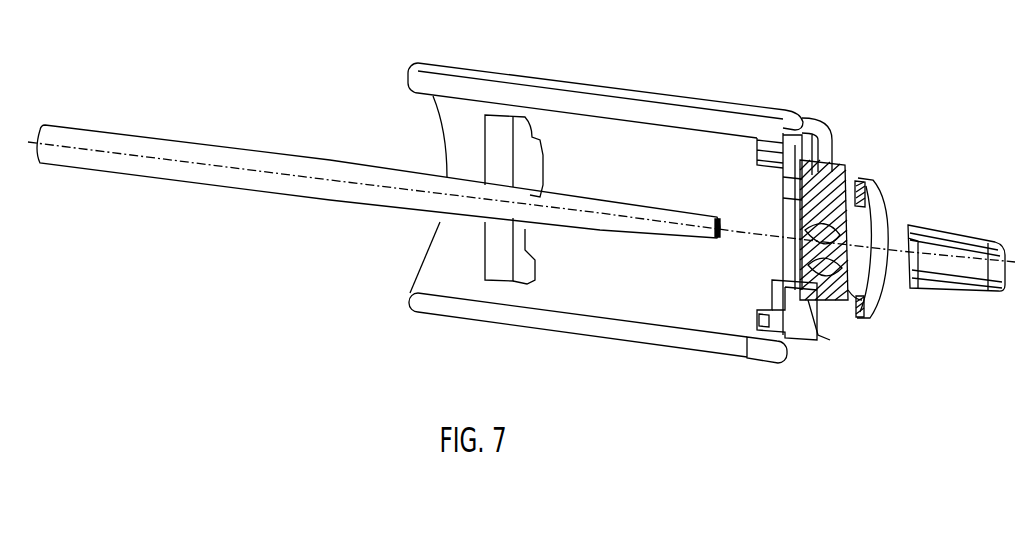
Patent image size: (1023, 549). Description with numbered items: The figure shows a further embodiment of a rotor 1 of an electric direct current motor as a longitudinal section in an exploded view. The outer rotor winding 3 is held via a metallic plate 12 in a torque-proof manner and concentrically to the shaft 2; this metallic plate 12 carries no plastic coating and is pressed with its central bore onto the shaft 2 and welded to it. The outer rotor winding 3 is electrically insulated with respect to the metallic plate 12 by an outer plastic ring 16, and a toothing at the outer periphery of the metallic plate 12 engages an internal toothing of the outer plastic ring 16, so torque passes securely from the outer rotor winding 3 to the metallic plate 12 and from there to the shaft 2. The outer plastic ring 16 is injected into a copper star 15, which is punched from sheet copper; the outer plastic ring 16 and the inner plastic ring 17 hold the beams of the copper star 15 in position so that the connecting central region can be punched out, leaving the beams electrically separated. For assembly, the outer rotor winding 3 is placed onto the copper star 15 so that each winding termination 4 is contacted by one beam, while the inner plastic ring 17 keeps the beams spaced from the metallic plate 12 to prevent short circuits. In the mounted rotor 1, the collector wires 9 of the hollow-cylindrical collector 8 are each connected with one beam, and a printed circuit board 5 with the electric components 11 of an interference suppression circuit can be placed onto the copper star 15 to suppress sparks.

The rotor 1 is at (521, 202).
The shaft 2 is at (150, 150).
The outer rotor winding 3 is at (441, 82).
The winding terminations 4 is at (828, 148).
The printed circuit board 5 is at (876, 306).
The hollow-cylindrical collector 8 is at (988, 300).
The collector wires 9 is at (955, 227).
The electric components 11 is at (879, 178).
The metallic plate 12 is at (495, 248).
The copper star 15 is at (815, 342).
The outer plastic ring 16 is at (745, 358).
The inner plastic ring 17 is at (767, 272).